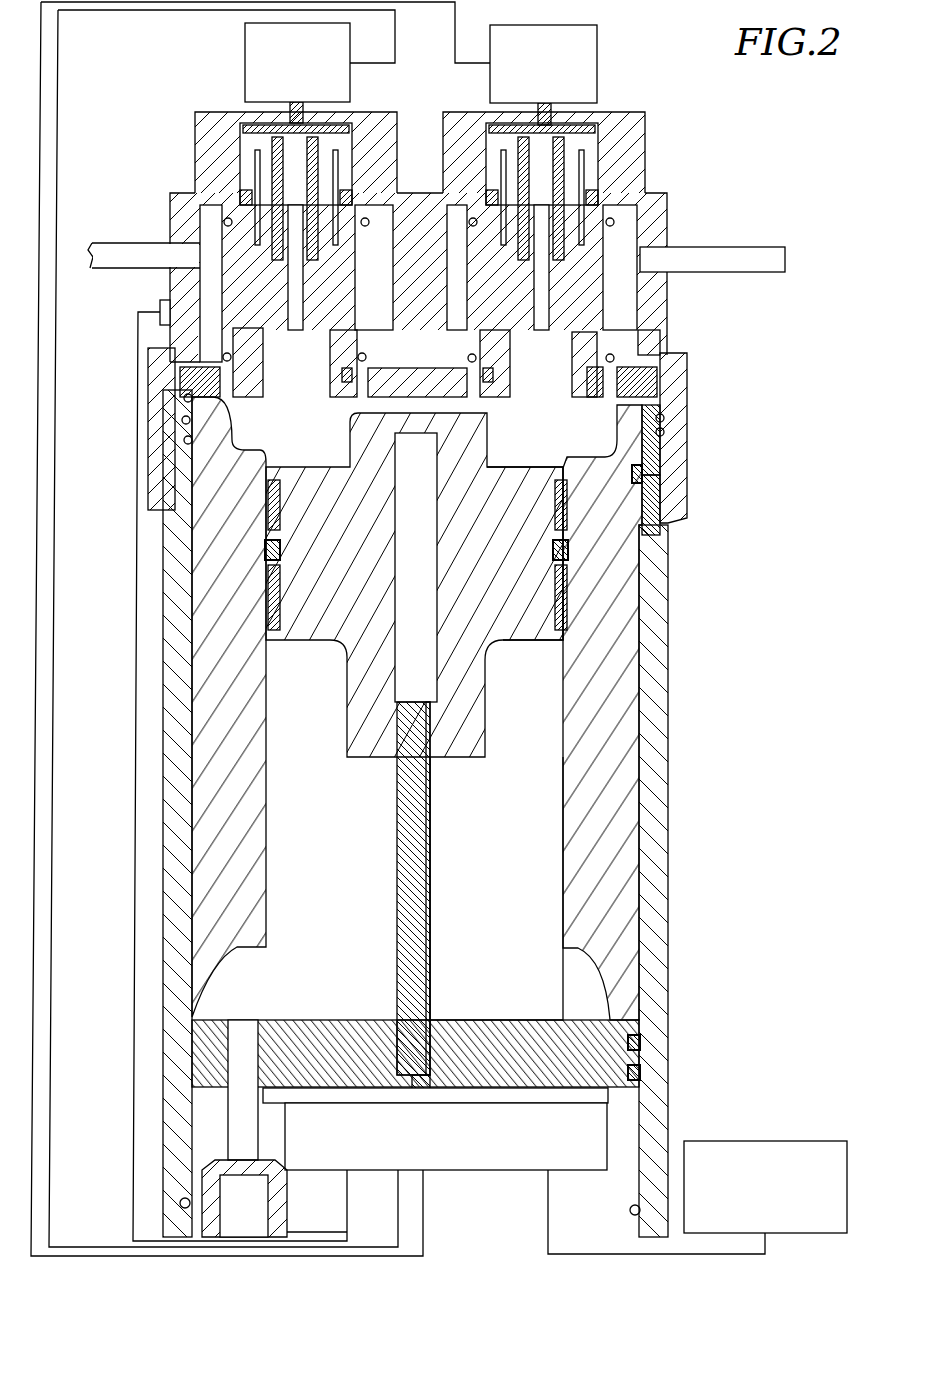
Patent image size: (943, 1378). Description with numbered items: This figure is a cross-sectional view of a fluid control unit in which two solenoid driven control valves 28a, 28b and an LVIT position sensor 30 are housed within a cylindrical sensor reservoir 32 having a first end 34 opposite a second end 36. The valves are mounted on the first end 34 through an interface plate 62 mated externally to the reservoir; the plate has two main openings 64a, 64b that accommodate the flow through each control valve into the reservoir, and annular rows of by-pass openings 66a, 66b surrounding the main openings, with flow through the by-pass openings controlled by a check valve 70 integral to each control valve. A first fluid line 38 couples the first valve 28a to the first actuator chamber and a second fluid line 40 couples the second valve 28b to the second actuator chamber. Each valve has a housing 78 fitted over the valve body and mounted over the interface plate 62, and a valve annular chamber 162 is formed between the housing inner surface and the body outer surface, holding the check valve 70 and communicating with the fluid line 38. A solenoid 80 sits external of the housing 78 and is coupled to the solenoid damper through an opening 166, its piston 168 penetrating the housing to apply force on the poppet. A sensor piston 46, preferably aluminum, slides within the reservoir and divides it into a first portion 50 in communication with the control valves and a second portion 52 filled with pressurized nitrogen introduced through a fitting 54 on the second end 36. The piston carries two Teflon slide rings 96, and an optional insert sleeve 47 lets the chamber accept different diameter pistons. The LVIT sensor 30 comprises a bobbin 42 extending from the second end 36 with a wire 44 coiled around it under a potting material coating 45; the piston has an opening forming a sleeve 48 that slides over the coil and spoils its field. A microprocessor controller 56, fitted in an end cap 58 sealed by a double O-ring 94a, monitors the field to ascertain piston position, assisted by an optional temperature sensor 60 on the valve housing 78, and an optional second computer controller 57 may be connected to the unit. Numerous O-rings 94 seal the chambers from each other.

The solenoid 80 is at (257, 55).
The second solenoid valve 28b is at (354, 112).
The first solenoid valve 28a is at (645, 112).
The opening 166 is at (518, 118).
The solenoid piston 168 is at (553, 112).
The housing 78 is at (663, 212).
The second fluid line 40 is at (157, 242).
The first fluid line 38 is at (728, 273).
The valve annular chamber 162 is at (627, 288).
The temperature sensor 60 is at (160, 305).
The by-pass openings 66b is at (172, 393).
The by-pass openings 66a is at (638, 347).
The check valve 70 is at (610, 370).
The main opening 64a is at (620, 417).
The main opening 64b is at (305, 388).
The first portion 50 is at (643, 471).
The interface plate 62 is at (560, 512).
The Teflon slide rings 96 is at (560, 547).
The O-rings 94 is at (555, 568).
The sensor piston 46 is at (505, 567).
The first end 34 is at (397, 460).
The sleeve 48 is at (403, 657).
The LVIT position sensor 30 is at (450, 823).
The insert sleeve 47 is at (608, 757).
The bobbin 42 is at (413, 836).
The potting material coating 45 is at (435, 857).
The wire 44 is at (390, 880).
The sensor reservoir 32 is at (668, 852).
The second portion 52 is at (535, 905).
The second end 36 is at (572, 1023).
The double O-ring 94a is at (638, 1040).
The end cap 58 is at (590, 1097).
The microprocessor controller 56 is at (590, 1128).
The second computer controller 57 is at (765, 1141).
The fitting 54 is at (255, 1196).